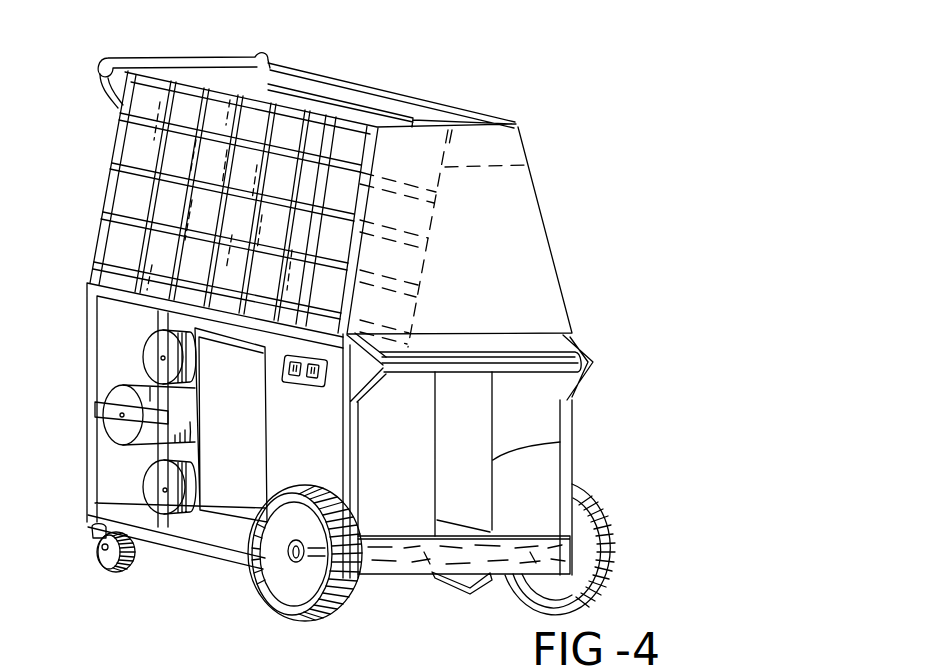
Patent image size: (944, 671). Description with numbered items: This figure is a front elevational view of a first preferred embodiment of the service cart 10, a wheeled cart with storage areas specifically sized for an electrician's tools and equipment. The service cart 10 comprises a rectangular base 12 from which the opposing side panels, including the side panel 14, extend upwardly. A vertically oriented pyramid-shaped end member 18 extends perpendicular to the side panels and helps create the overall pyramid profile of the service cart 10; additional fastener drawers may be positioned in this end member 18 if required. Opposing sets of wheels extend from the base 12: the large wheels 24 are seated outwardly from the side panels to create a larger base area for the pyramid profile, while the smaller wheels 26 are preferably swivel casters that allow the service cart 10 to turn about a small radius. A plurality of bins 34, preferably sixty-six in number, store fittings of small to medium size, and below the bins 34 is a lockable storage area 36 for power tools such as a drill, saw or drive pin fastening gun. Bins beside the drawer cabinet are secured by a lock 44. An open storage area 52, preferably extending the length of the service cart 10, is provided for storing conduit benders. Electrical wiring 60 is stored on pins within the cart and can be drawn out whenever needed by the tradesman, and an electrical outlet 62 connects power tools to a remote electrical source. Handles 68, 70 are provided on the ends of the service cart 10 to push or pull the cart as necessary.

The service cart 10 is at (588, 178).
The rectangular base 12 is at (207, 553).
The side panel 14 is at (318, 470).
The pyramid-shaped end member 18 is at (540, 274).
The wheels 24 is at (343, 605).
The smaller wheels 26 is at (98, 565).
The bins 34 is at (123, 203).
The lockable storage area 36 is at (217, 470).
The lock 44 is at (153, 667).
The open storage area 52 is at (493, 460).
The electrical wiring 60 is at (143, 392).
The electrical outlet 62 is at (300, 383).
The handle 68 is at (573, 337).
The handle 70 is at (181, 58).